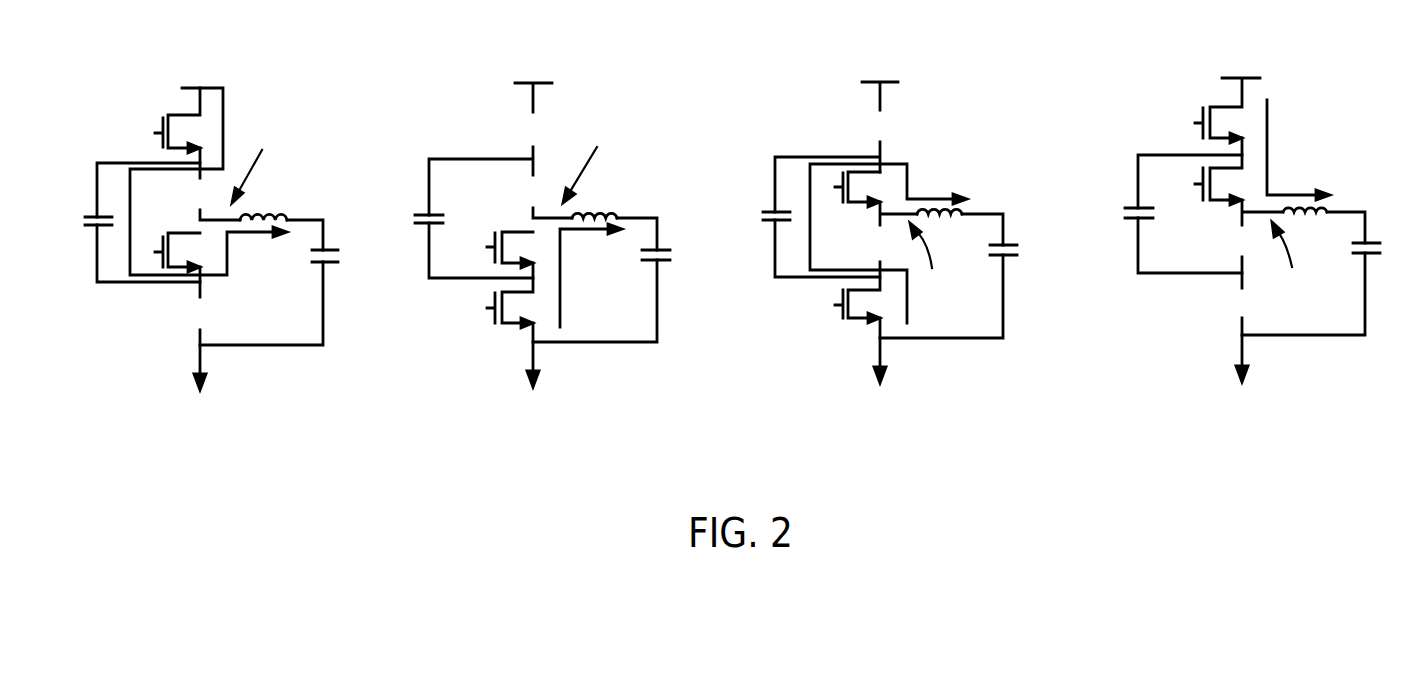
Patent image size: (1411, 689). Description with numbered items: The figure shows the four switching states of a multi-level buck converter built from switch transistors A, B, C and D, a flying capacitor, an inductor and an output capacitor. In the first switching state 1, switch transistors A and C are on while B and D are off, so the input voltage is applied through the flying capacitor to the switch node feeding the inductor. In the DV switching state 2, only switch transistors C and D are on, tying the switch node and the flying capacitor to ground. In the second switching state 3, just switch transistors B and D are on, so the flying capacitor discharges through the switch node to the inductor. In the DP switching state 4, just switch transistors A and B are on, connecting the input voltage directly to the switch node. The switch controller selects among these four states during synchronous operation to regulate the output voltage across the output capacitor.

The D1 switching state (switches A and C closed) 1 is at (211, 265).
The DV switching state (switches C and D closed) 2 is at (524, 263).
The D2 switching state (switches B and D closed) 3 is at (874, 260).
The DP switching state (switches A and B closed) 4 is at (1237, 257).